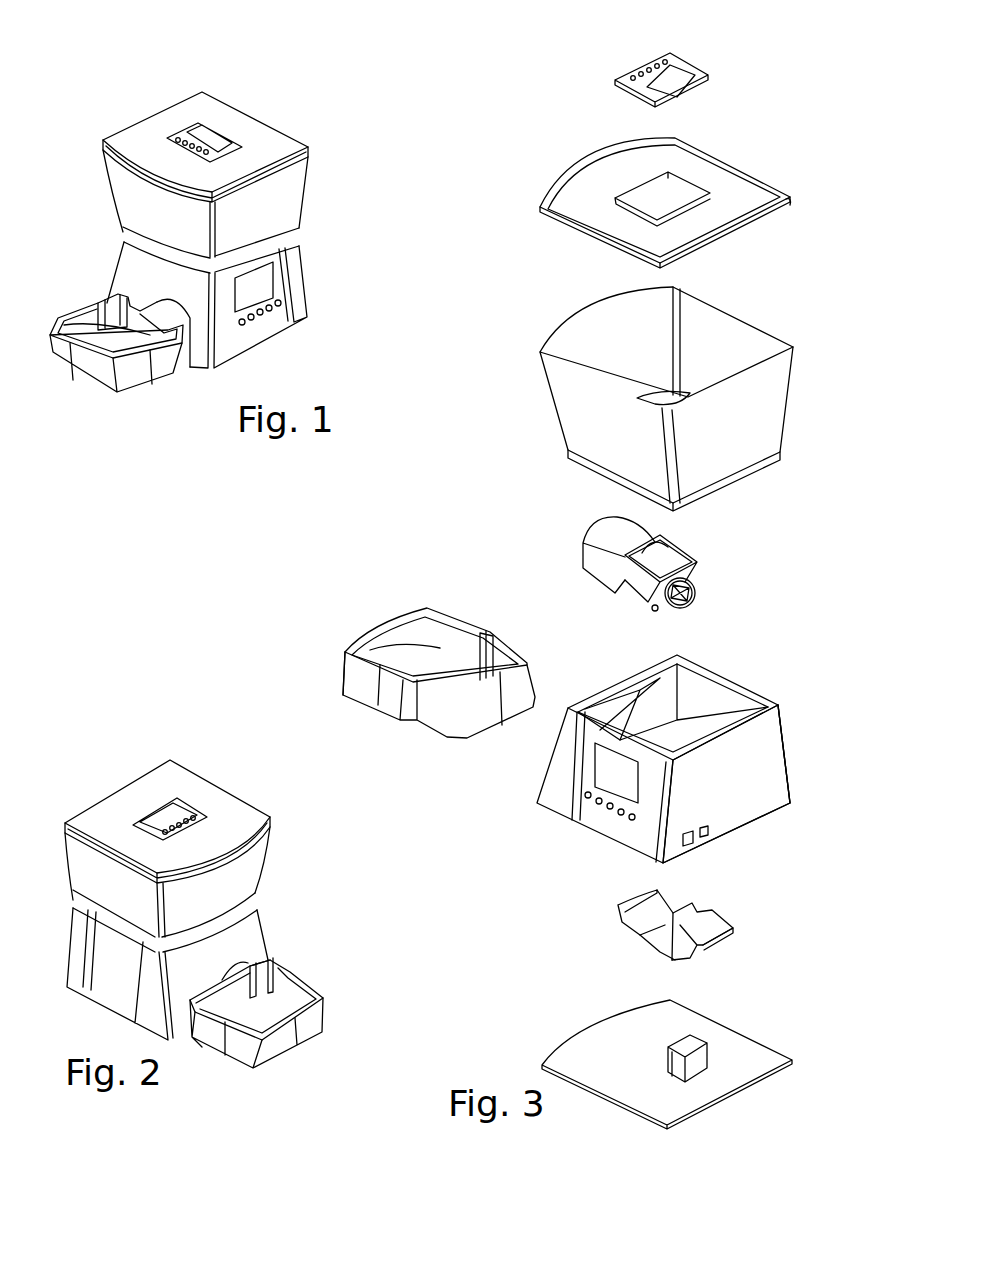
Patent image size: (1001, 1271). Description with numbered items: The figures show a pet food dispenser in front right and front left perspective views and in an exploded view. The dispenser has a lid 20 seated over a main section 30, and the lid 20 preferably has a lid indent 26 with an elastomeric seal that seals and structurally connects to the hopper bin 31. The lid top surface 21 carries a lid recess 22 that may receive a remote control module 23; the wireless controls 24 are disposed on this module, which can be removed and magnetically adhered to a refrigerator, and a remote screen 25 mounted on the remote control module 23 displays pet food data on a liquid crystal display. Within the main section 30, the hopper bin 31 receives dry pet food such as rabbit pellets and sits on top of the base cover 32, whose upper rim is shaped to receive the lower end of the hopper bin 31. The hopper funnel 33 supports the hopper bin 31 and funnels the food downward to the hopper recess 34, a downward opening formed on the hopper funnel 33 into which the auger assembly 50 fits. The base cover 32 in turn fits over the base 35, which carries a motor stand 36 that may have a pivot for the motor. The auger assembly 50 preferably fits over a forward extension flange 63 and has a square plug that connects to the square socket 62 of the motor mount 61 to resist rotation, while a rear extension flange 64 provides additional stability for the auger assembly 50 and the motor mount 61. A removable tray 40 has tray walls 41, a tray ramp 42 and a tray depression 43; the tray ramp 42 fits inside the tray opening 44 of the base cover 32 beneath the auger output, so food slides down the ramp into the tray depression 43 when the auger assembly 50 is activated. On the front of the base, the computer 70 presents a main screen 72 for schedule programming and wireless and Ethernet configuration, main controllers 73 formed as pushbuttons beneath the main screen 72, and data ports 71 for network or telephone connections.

In FIG. 1, the lid 20 is at (162, 120).
In FIG. 2, the lid 20 is at (237, 808).
In FIG. 3, the lid 20 is at (558, 235).
In FIG. 1, the lid top surface 21 is at (267, 140).
In FIG. 2, the lid top surface 21 is at (187, 763).
In FIG. 3, the lid top surface 21 is at (583, 200).
In FIG. 3, the lid recess 22 is at (668, 192).
In FIG. 1, the remote control module 23 is at (205, 138).
In FIG. 2, the remote control module 23 is at (167, 817).
In FIG. 3, the remote control module 23 is at (693, 65).
In FIG. 3, the wireless controls 24 is at (668, 62).
In FIG. 3, the remote screen 25 is at (633, 90).
In FIG. 3, the lid indent 26 is at (792, 202).
In FIG. 1, the main section 30 is at (118, 185).
In FIG. 3, the main section 30 is at (786, 781).
In FIG. 1, the hopper bin 31 is at (293, 197).
In FIG. 2, the hopper bin 31 is at (250, 867).
In FIG. 3, the hopper bin 31 is at (733, 327).
In FIG. 3, the base cover 32 is at (772, 752).
In FIG. 3, the hopper funnel 33 is at (698, 683).
In FIG. 3, the hopper recess 34 is at (622, 680).
In FIG. 3, the base 35 is at (757, 1047).
In FIG. 3, the motor stand 36 is at (663, 1052).
In FIG. 1, the tray 40 is at (143, 387).
In FIG. 3, the tray 40 is at (354, 612).
In FIG. 3, the tray walls 41 is at (407, 623).
In FIG. 1, the tray ramp 42 is at (103, 300).
In FIG. 2, the tray ramp 42 is at (240, 983).
In FIG. 3, the tray ramp 42 is at (483, 667).
In FIG. 1, the tray depression 43 is at (100, 342).
In FIG. 3, the tray depression 43 is at (400, 675).
In FIG. 1, the tray opening 44 is at (192, 323).
In FIG. 2, the tray opening 44 is at (222, 977).
In FIG. 3, the auger assembly 50 is at (605, 533).
In FIG. 3, the motor mount 61 is at (698, 912).
In FIG. 3, the square socket 62 is at (667, 923).
In FIG. 3, the forward extension flange 63 is at (620, 910).
In FIG. 3, the rear extension flange 64 is at (725, 937).
In FIG. 1, the computer 70 is at (263, 282).
In FIG. 3, the data ports 71 is at (720, 797).
In FIG. 3, the main screen 72 is at (600, 768).
In FIG. 3, the main controllers 73 is at (608, 807).